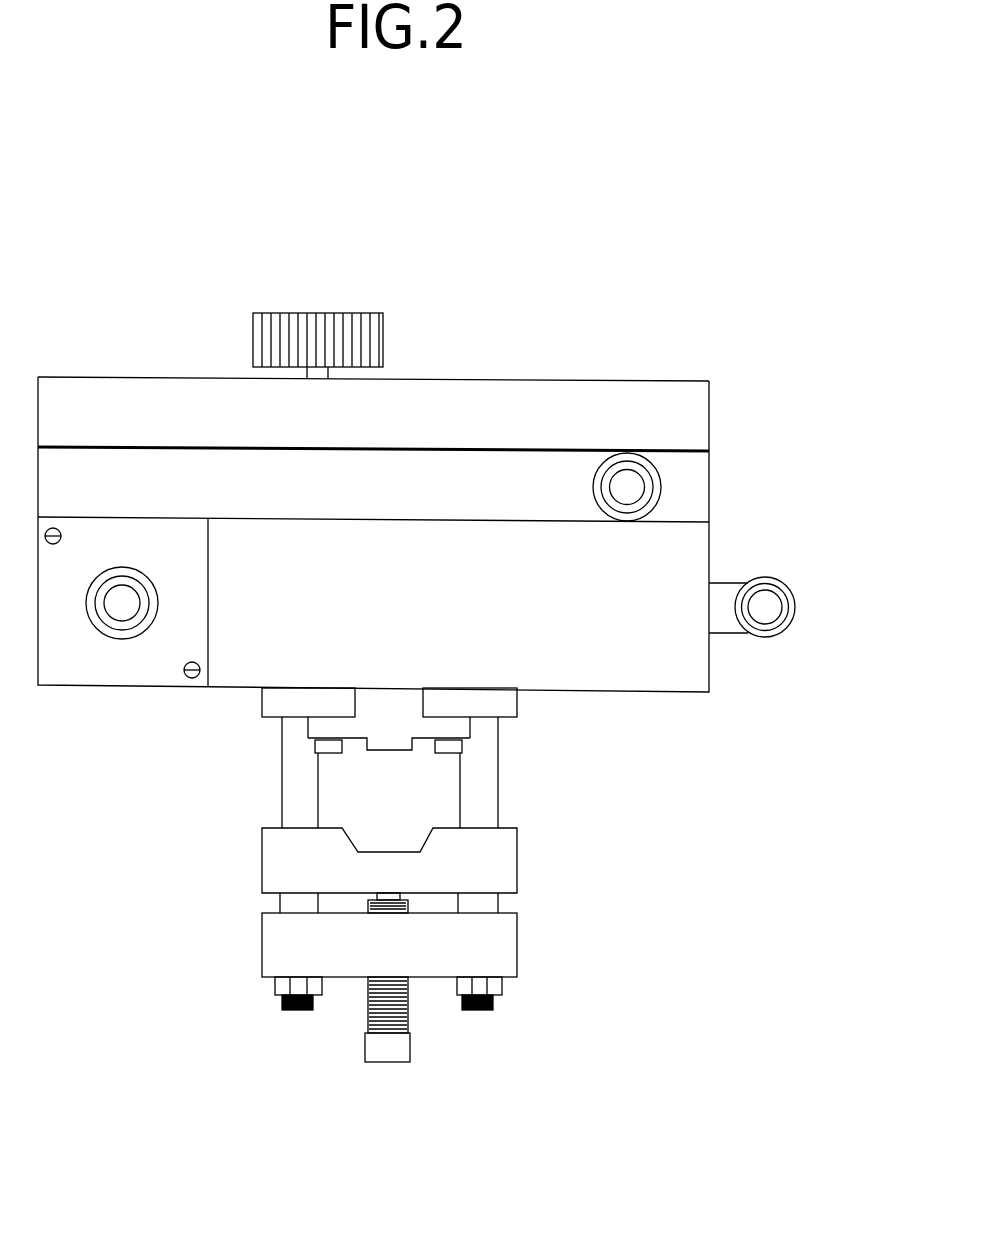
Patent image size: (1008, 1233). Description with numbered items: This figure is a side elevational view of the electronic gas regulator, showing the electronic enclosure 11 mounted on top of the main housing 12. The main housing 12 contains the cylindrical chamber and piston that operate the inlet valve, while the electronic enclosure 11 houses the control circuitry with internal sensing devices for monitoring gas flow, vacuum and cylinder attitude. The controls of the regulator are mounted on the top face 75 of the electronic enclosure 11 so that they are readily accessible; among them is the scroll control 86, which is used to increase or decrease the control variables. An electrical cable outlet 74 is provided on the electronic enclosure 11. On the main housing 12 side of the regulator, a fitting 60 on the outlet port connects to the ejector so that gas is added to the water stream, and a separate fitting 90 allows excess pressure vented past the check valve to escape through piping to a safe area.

The electronic enclosure 11 is at (712, 420).
The main housing 12 is at (708, 692).
The fitting 60 is at (118, 639).
The electrical cable outlet 74 is at (662, 487).
The top face 75 is at (622, 380).
The scroll control 86 is at (383, 328).
The fitting 90 is at (788, 628).